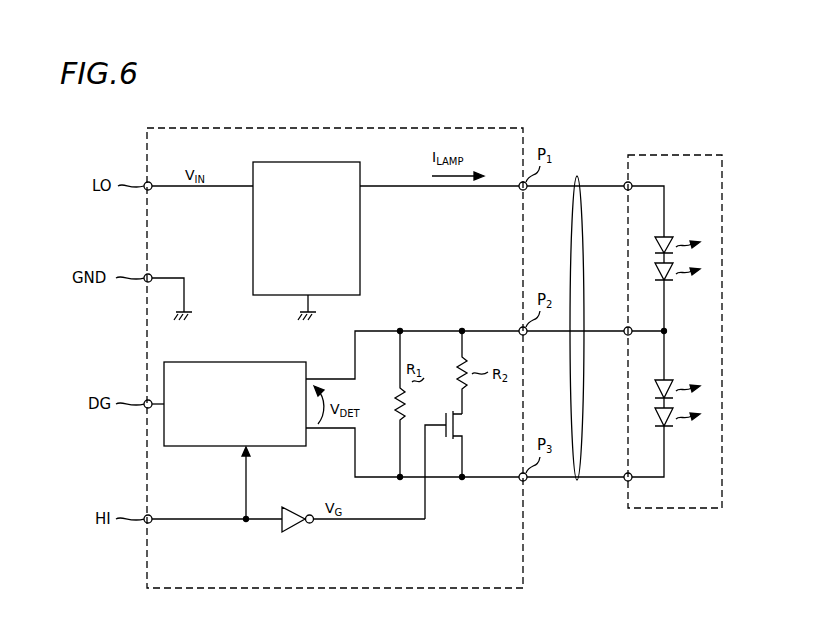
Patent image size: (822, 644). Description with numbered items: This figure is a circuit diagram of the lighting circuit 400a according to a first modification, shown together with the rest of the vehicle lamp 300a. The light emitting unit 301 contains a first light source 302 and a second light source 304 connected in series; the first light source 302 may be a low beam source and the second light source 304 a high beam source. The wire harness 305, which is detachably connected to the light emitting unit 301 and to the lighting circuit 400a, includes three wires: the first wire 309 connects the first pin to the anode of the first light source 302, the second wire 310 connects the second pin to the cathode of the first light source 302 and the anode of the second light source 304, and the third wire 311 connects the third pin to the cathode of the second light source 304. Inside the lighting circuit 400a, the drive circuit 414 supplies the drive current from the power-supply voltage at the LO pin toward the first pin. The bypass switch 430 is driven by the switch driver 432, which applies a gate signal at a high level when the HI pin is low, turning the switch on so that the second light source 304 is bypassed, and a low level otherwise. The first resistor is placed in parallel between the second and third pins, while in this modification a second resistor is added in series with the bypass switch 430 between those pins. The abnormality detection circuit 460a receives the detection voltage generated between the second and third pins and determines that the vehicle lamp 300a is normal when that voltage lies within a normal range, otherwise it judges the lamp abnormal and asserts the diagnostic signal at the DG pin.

The vehicle lamp 300a is at (735, 86).
The light emitting unit 301 is at (690, 508).
The first light source 302 is at (670, 233).
The second light source 304 is at (672, 378).
The wire harness 305 is at (577, 480).
The first wire 309 is at (602, 183).
The second wire 310 is at (606, 328).
The third wire 311 is at (606, 474).
The lighting circuit 400a is at (400, 128).
The drive circuit 414 is at (300, 163).
The bypass switch 430 is at (466, 420).
The switch driver 432 is at (296, 533).
The abnormality detection circuit 460a is at (248, 346).